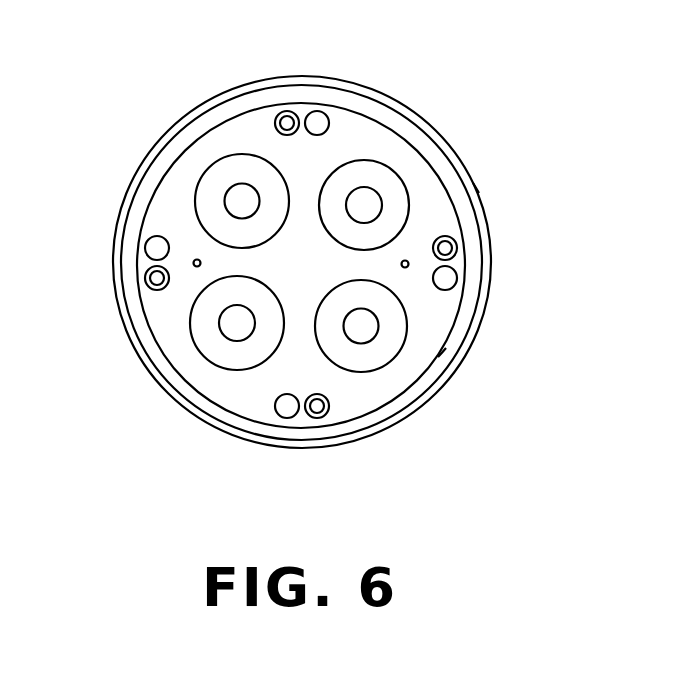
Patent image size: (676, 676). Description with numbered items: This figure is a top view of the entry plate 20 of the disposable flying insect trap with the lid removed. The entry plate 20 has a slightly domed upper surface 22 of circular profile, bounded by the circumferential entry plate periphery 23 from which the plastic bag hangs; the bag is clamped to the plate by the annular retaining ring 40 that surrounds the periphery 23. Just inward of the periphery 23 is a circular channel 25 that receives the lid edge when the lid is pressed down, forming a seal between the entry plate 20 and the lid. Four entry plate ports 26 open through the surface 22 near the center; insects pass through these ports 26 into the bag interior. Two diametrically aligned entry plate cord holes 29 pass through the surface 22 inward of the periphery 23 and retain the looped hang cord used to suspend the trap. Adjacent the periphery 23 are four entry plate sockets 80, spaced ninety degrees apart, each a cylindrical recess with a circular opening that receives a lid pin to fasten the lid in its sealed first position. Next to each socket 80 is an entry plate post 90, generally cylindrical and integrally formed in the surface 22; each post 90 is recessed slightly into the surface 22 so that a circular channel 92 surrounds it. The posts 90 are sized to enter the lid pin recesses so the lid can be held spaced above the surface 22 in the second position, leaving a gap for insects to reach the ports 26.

The entry plate 20 is at (176, 134).
The entry plate upper surface 22 is at (407, 156).
The entry plate periphery 23 is at (460, 165).
The channel 25 is at (440, 358).
The entry plate ports 26 is at (277, 230).
The entry plate cord holes 29 is at (197, 259).
The retaining ring 40 is at (480, 193).
The entry plate sockets 80 is at (318, 120).
The entry plate posts 90 is at (274, 126).
The circular channel 92 is at (287, 122).